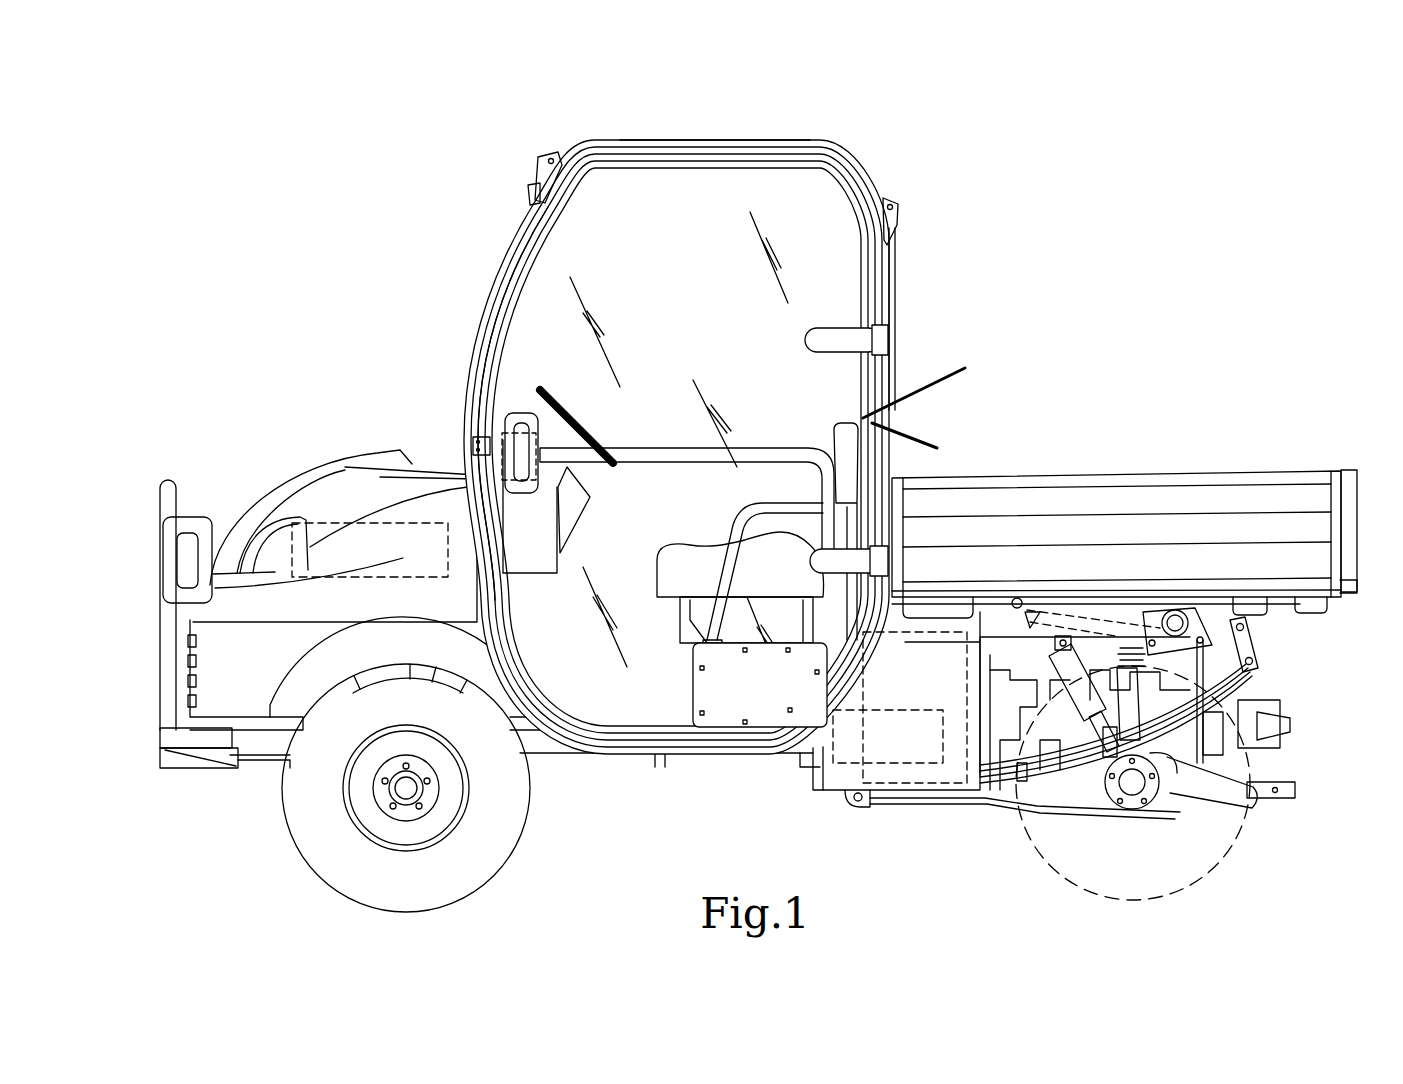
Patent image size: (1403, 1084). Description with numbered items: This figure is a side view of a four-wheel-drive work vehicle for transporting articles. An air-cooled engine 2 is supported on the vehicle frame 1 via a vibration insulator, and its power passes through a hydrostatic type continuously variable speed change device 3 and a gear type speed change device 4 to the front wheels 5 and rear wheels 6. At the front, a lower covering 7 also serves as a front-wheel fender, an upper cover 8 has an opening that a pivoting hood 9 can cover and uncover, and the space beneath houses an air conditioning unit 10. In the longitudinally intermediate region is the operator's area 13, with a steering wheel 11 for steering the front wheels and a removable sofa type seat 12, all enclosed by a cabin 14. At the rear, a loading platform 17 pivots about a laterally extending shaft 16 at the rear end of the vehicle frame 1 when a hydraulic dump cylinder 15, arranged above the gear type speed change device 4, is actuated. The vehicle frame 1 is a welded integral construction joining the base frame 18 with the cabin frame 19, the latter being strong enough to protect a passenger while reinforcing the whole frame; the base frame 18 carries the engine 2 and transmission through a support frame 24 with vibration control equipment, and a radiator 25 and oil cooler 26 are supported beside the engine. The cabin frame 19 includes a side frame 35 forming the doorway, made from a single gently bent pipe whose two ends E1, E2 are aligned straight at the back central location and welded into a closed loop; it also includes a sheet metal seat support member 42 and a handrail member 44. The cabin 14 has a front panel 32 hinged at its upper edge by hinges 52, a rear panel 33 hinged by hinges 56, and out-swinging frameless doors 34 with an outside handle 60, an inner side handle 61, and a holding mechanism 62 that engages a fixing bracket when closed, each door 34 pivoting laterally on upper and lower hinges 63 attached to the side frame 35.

The vehicle frame 1 is at (568, 827).
The air-cooled engine 2 is at (985, 657).
The hydrostatic type continuously variable speed change device 3 is at (1290, 730).
The gear type speed change device 4 is at (1057, 790).
The front wheels 5 is at (300, 828).
The rear wheels 6 is at (1250, 823).
The lower covering 7 is at (258, 708).
The upper cover 8 is at (375, 494).
The hood 9 is at (250, 513).
The air conditioning unit 10 is at (330, 523).
The steering wheel 11 is at (590, 425).
The seat 12 is at (680, 557).
The operator's area 13 is at (674, 346).
The cabin 14 is at (883, 139).
The hydraulic dump cylinder 15 is at (1033, 612).
The laterally extending shaft 16 is at (1251, 624).
The loading platform 17 is at (1100, 477).
The base frame 18 is at (583, 768).
The cabin frame 19 is at (699, 768).
The support frame 24 is at (1103, 812).
The radiator 25 is at (933, 790).
The oil cooler 26 is at (833, 786).
The front panel 32 is at (480, 315).
The rear panel 33 is at (895, 298).
The door 34 is at (641, 185).
The side frame 35 is at (726, 140).
The seat support member 42 is at (690, 690).
The handrail member 44 is at (733, 513).
The hinge 52 is at (535, 176).
The hinge 56 is at (900, 215).
The outside handle 60 is at (522, 415).
The inner side handle 61 is at (745, 450).
The holding mechanism 62 is at (538, 493).
The hinge 63 is at (805, 340).
The end of pipe E1 is at (931, 383).
The end of pipe E2 is at (924, 444).